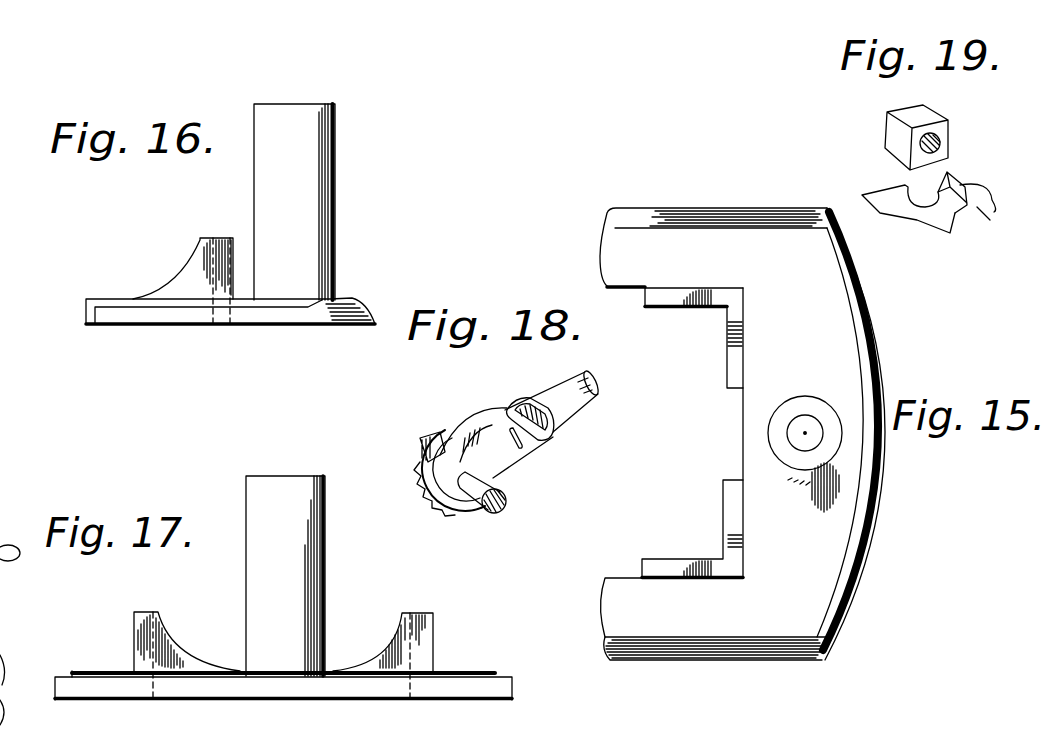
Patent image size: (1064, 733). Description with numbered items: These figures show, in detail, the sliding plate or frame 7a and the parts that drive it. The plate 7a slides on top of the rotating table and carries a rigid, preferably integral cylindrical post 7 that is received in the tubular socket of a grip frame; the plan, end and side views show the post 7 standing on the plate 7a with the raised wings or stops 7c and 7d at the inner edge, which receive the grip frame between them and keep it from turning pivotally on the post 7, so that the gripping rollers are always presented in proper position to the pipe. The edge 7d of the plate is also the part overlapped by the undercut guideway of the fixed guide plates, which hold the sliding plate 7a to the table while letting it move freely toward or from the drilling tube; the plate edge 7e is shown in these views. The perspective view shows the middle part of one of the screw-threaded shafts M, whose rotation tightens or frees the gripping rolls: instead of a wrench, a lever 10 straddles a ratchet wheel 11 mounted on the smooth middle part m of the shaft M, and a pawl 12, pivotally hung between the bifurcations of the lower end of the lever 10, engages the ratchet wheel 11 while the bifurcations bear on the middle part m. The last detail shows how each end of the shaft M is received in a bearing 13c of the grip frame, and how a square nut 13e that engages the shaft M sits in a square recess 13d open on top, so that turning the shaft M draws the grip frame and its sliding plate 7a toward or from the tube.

In FIG. 16, the cylindrical post 7 is at (296, 110).
In FIG. 17, the cylindrical post 7 is at (327, 512).
In FIG. 15, the cylindrical post 7 is at (801, 400).
In FIG. 16, the sliding plate or frame 7a is at (357, 303).
In FIG. 17, the sliding plate or frame 7a is at (325, 695).
In FIG. 15, the sliding plate or frame 7a is at (743, 434).
In FIG. 17, the raised wing or stop 7c is at (155, 612).
In FIG. 15, the raised wing or stop 7c is at (732, 308).
In FIG. 16, the raised wing or stop 7d is at (219, 231).
In FIG. 17, the raised wing or stop 7d is at (423, 620).
In FIG. 15, the raised wing or stop 7d is at (725, 553).
In FIG. 17, the rail plate 7e is at (530, 695).
In FIG. 15, the rail plate 7e is at (769, 212).
In FIG. 18, the lever 10 is at (573, 398).
In FIG. 18, the ratchet wheel 11 is at (449, 482).
In FIG. 18, the pawl 12 is at (475, 433).
In FIG. 18, the screw-threaded shaft M is at (510, 487).
In FIG. 18, the smooth middle part m is at (501, 504).
In FIG. 19, the bearing 13c is at (908, 185).
In FIG. 19, the square recess 13d is at (958, 192).
In FIG. 19, the square nut 13e is at (926, 127).